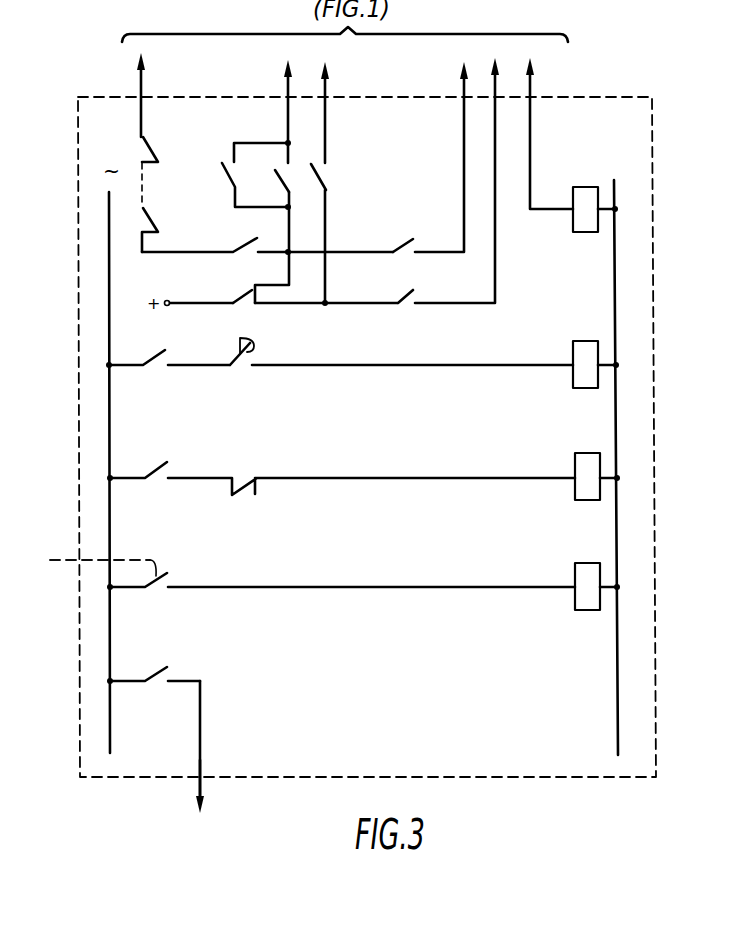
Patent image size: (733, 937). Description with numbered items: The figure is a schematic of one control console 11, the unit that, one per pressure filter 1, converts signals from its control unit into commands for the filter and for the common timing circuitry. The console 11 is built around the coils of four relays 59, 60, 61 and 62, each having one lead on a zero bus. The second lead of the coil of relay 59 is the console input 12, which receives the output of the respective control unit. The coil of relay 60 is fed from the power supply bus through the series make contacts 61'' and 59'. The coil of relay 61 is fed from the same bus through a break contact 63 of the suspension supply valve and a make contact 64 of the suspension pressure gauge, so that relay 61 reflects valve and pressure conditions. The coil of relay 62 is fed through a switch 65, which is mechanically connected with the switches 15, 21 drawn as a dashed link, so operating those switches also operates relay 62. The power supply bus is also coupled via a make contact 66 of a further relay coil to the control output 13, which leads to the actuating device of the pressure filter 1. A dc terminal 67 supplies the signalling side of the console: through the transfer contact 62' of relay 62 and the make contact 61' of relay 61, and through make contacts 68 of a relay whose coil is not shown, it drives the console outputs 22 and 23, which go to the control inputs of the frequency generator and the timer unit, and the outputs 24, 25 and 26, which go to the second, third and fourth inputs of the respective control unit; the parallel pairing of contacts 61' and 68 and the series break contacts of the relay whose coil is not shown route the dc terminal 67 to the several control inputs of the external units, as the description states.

The pressure filter 1 is at (222, 806).
The control console 11 is at (656, 165).
The input of the control console 12 is at (532, 96).
The control output of the control console 13 is at (203, 780).
The switch 15 is at (89, 588).
The switch 21 is at (89, 576).
The output of the control console 22 is at (497, 96).
The output of the control console 23 is at (328, 96).
The output of the control console 24 is at (462, 96).
The output of the control console 25 is at (143, 97).
The output of the control console 26 is at (286, 96).
The relay coil 59 is at (584, 193).
The make contact of relay 59 59' is at (135, 341).
The relay coil 60 is at (582, 341).
The relay coil 61 is at (581, 465).
The make contact of relay 61 61' is at (263, 215).
The make contact of relay 61 61'' is at (370, 341).
The relay coil 62 is at (581, 574).
The make or transfer contact of relay 62 62' is at (236, 280).
The break contact of suspension supply valve 63 is at (245, 488).
The make contact of suspension pressure gauge 64 is at (163, 462).
The switch 65 is at (156, 577).
The make contact of relay coil 66 is at (152, 670).
The dc terminal 67 is at (168, 300).
The make contact of relay 68 is at (226, 172).